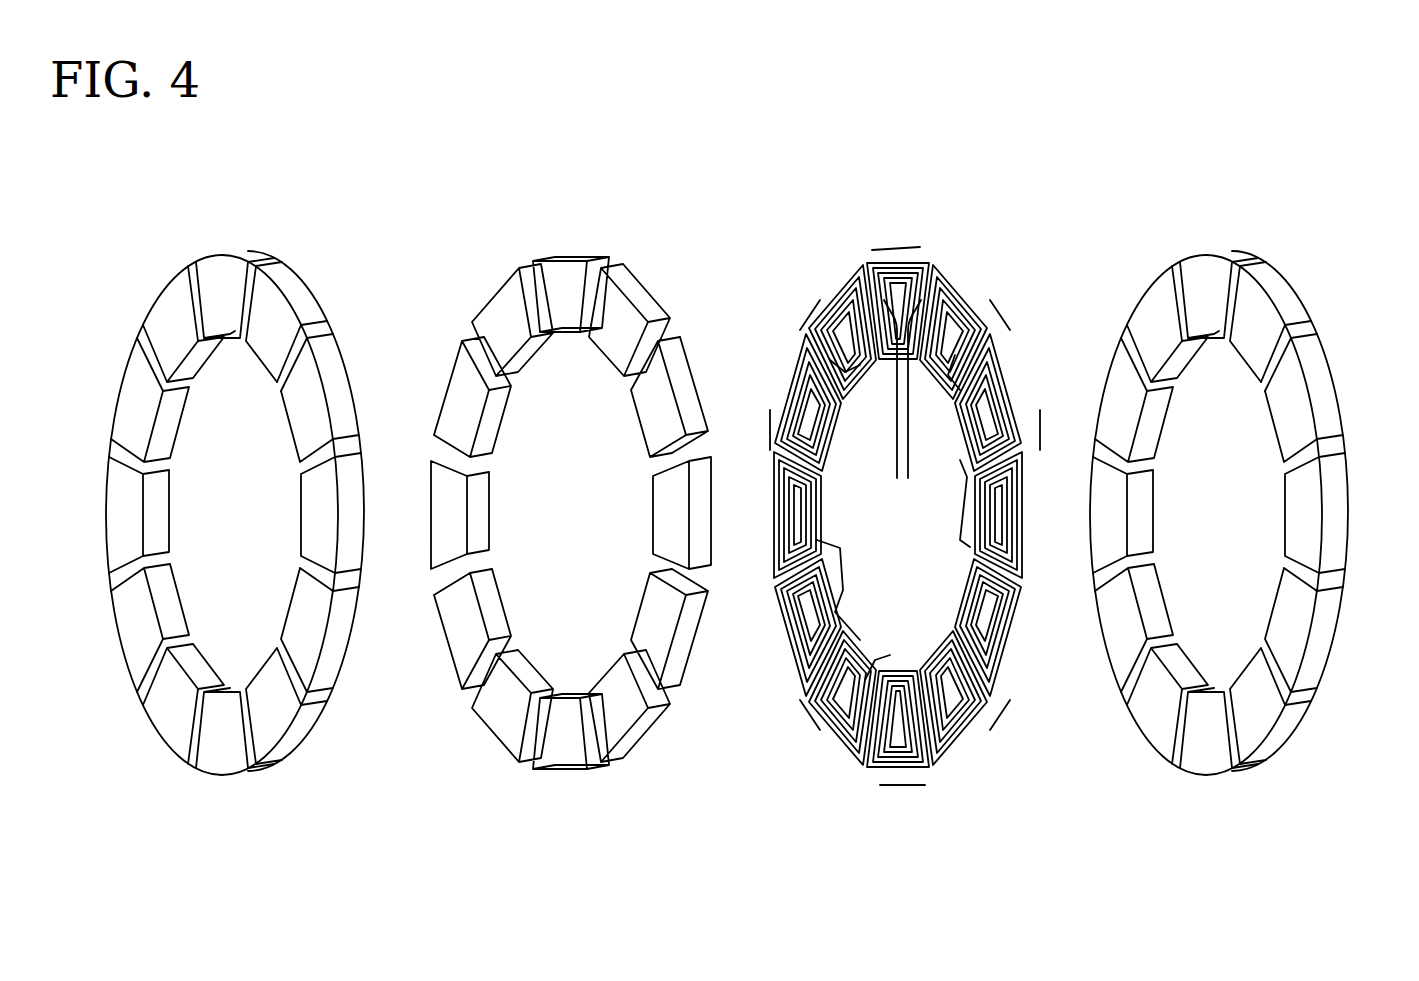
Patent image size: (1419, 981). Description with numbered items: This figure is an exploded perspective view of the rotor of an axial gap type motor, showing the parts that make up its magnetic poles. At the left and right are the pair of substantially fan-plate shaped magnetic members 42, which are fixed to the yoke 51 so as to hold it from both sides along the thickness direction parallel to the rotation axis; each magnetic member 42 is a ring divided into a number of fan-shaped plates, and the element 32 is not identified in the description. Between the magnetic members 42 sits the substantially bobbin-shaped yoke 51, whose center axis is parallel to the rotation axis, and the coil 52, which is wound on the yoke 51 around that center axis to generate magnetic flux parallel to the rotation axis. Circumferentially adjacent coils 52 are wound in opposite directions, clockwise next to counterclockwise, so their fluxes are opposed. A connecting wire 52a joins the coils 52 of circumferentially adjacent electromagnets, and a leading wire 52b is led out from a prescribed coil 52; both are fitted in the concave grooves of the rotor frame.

The magnetic member 42 is at (296, 293).
The tooth slot 32 is at (318, 327).
The yoke 51 is at (620, 300).
The coil 52 is at (865, 270).
The connecting wire 52a is at (835, 580).
The leading wire 52b is at (897, 470).